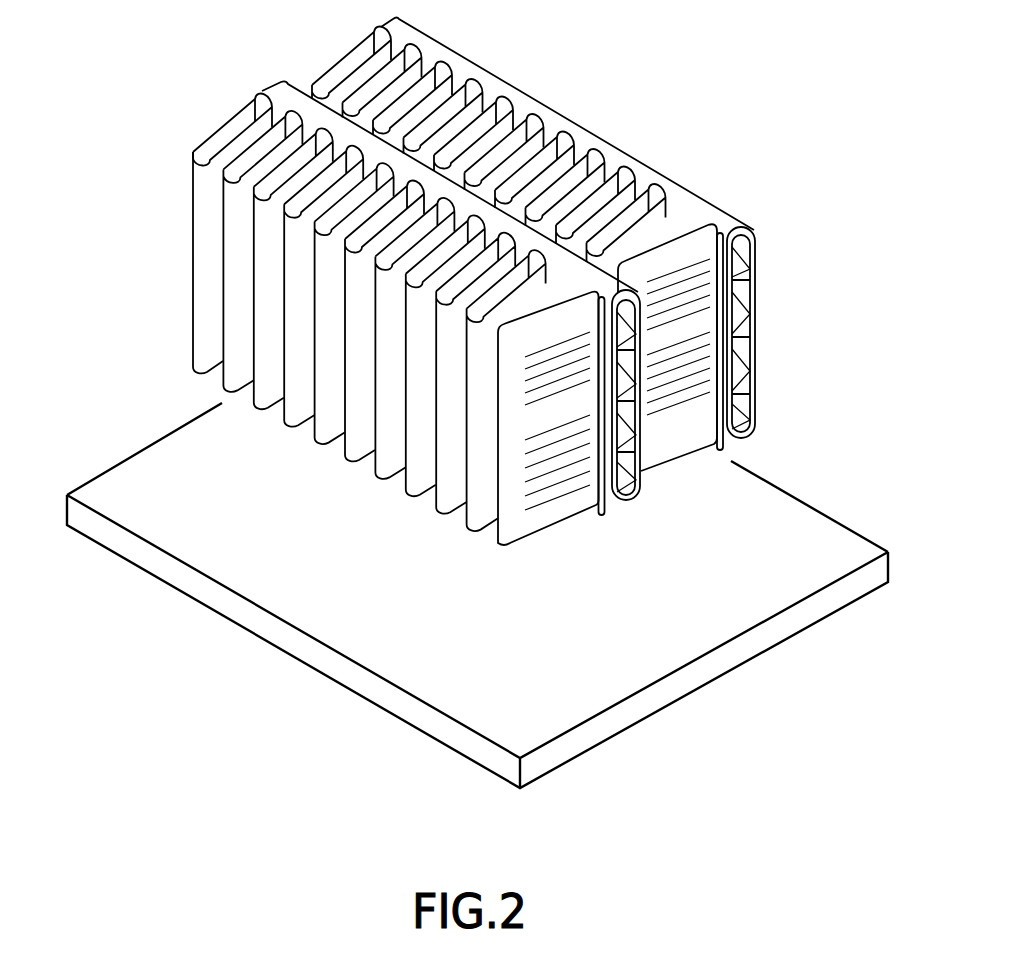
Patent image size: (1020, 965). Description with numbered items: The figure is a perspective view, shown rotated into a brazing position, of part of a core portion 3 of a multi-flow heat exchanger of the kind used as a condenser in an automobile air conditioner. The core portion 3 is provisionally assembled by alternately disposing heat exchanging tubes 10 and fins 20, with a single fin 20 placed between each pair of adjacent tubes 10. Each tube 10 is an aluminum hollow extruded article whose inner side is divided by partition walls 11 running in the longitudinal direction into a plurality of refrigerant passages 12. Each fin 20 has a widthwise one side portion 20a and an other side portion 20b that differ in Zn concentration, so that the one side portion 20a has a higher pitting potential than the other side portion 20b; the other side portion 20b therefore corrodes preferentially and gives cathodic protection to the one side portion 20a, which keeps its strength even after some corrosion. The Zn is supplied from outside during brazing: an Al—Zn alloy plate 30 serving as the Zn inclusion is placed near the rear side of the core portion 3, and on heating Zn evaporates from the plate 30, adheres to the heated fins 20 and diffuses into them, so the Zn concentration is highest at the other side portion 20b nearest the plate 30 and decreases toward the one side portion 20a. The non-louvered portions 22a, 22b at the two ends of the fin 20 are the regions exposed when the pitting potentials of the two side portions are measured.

The core portion 3 is at (117, 262).
The heat exchanging tube 10 is at (618, 499).
The partition wall 11 is at (748, 390).
The refrigerant passage 12 is at (740, 310).
The fin 20 is at (227, 142).
The one side portion of the fin 20a is at (190, 150).
The other side portion of the fin 20b is at (190, 267).
The non-louvered portion 22a is at (552, 327).
The non-louvered portion 22b is at (547, 513).
The Al—Zn alloy plate 30 is at (240, 608).